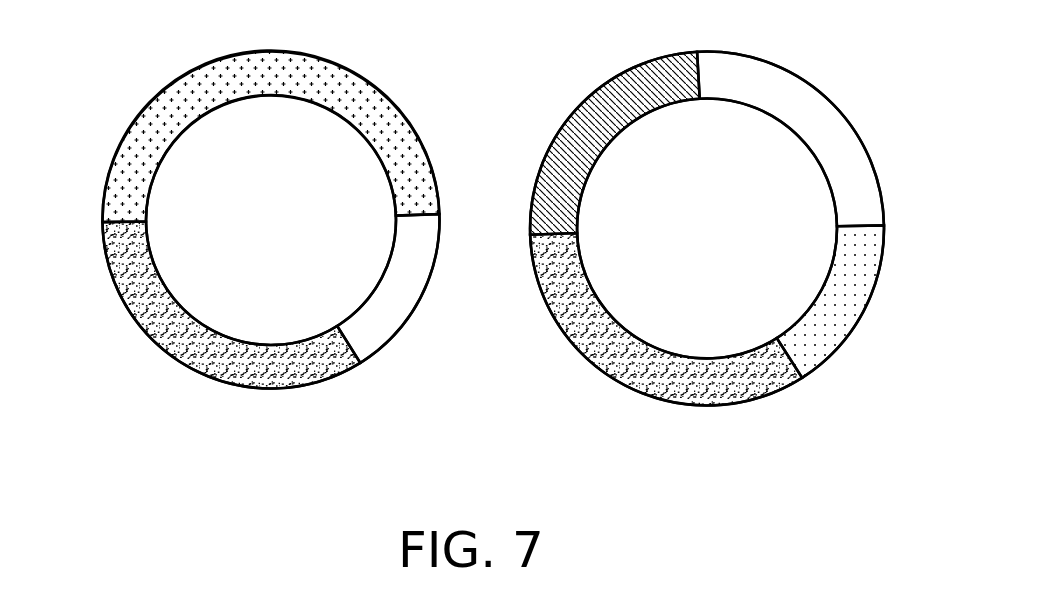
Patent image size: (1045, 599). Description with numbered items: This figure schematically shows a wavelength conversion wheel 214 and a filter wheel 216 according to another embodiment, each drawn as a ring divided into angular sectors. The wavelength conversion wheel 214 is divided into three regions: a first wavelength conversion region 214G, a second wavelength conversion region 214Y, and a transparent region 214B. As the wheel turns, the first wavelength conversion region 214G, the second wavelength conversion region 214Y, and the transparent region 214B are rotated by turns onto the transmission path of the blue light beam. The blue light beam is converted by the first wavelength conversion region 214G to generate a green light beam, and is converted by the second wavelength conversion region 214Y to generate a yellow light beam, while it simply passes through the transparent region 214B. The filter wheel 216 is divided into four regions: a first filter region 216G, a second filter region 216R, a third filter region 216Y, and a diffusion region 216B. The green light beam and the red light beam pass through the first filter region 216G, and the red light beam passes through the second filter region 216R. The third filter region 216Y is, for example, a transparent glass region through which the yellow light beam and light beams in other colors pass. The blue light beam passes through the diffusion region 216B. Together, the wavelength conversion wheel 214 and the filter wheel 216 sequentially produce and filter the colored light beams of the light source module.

The wavelength conversion wheel 214 is at (128, 387).
The second wavelength conversion region 214Y is at (262, 75).
The transparent region 214B is at (402, 292).
The first wavelength conversion region 214G is at (121, 298).
The filter wheel 216 is at (565, 396).
The second filter region 216R is at (617, 103).
The third filter region 216Y is at (810, 108).
The diffusion region 216B is at (830, 315).
The first filter region 216G is at (702, 387).